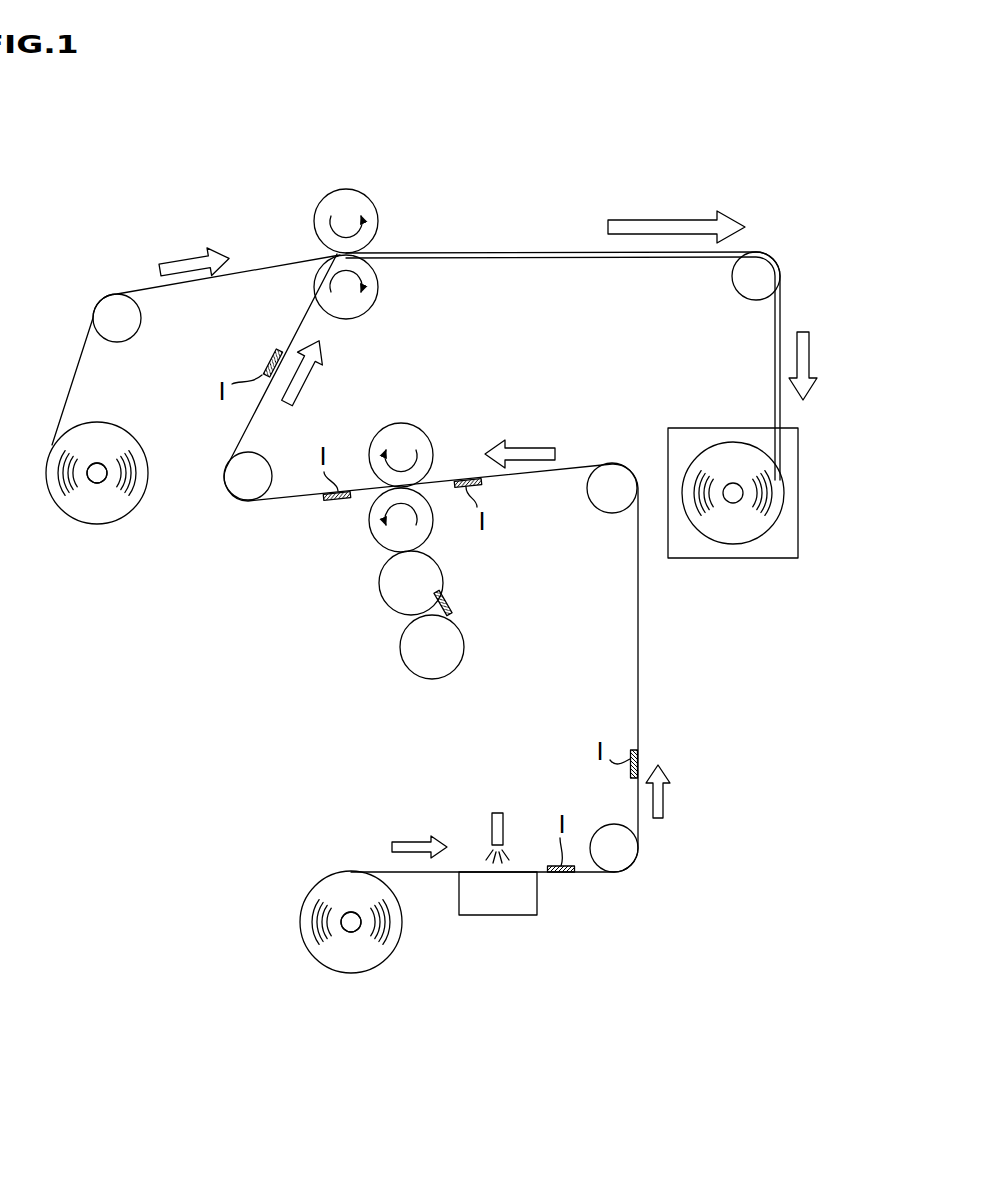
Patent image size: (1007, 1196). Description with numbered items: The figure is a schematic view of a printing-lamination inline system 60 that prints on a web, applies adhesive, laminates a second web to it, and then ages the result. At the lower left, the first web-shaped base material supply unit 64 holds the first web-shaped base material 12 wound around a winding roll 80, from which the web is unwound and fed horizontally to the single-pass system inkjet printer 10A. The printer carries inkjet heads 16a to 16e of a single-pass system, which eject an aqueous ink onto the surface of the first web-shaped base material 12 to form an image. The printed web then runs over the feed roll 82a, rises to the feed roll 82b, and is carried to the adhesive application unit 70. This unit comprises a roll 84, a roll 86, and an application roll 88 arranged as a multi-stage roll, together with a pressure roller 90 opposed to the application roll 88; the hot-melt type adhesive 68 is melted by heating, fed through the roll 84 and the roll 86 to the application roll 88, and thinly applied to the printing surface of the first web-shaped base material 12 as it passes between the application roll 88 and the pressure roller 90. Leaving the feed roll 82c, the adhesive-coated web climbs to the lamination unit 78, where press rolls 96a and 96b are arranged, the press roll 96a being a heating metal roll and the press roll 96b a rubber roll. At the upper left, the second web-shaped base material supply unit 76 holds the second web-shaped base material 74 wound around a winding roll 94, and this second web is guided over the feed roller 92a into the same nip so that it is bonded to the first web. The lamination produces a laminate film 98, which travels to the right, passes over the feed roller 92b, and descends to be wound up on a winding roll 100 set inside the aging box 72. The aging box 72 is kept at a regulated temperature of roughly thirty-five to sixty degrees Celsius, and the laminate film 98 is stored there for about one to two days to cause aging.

The printing-lamination inline system 60 is at (668, 143).
The first web-shaped base material 12 is at (563, 466).
The second web-shaped base material 74 is at (181, 284).
The laminate film 98 is at (525, 262).
The second web-shaped base material supply unit 76 is at (74, 511).
The winding roll 94 is at (95, 485).
The feed roller 92a is at (107, 306).
The feed roller 92b is at (768, 262).
The lamination unit 78 is at (411, 238).
The press roll 96a is at (352, 196).
The press roll 96b is at (368, 303).
The aging box 72 is at (769, 528).
The winding roll 100 is at (745, 494).
The adhesive application unit 70 is at (419, 546).
The pressure roller 90 is at (404, 426).
The application roll 88 is at (386, 534).
The roll 86 is at (388, 594).
The roll 84 is at (416, 658).
The feed roll 82a is at (625, 853).
The feed roll 82b is at (614, 477).
The feed roll 82c is at (240, 494).
The adhesive 68 is at (271, 355).
The single-pass system inkjet printer 10A is at (499, 910).
The inkjet head 16a is at (500, 817).
The inkjet head 16e is at (498, 813).
The first web-shaped base material supply unit 64 is at (334, 958).
The winding roll 80 is at (357, 934).